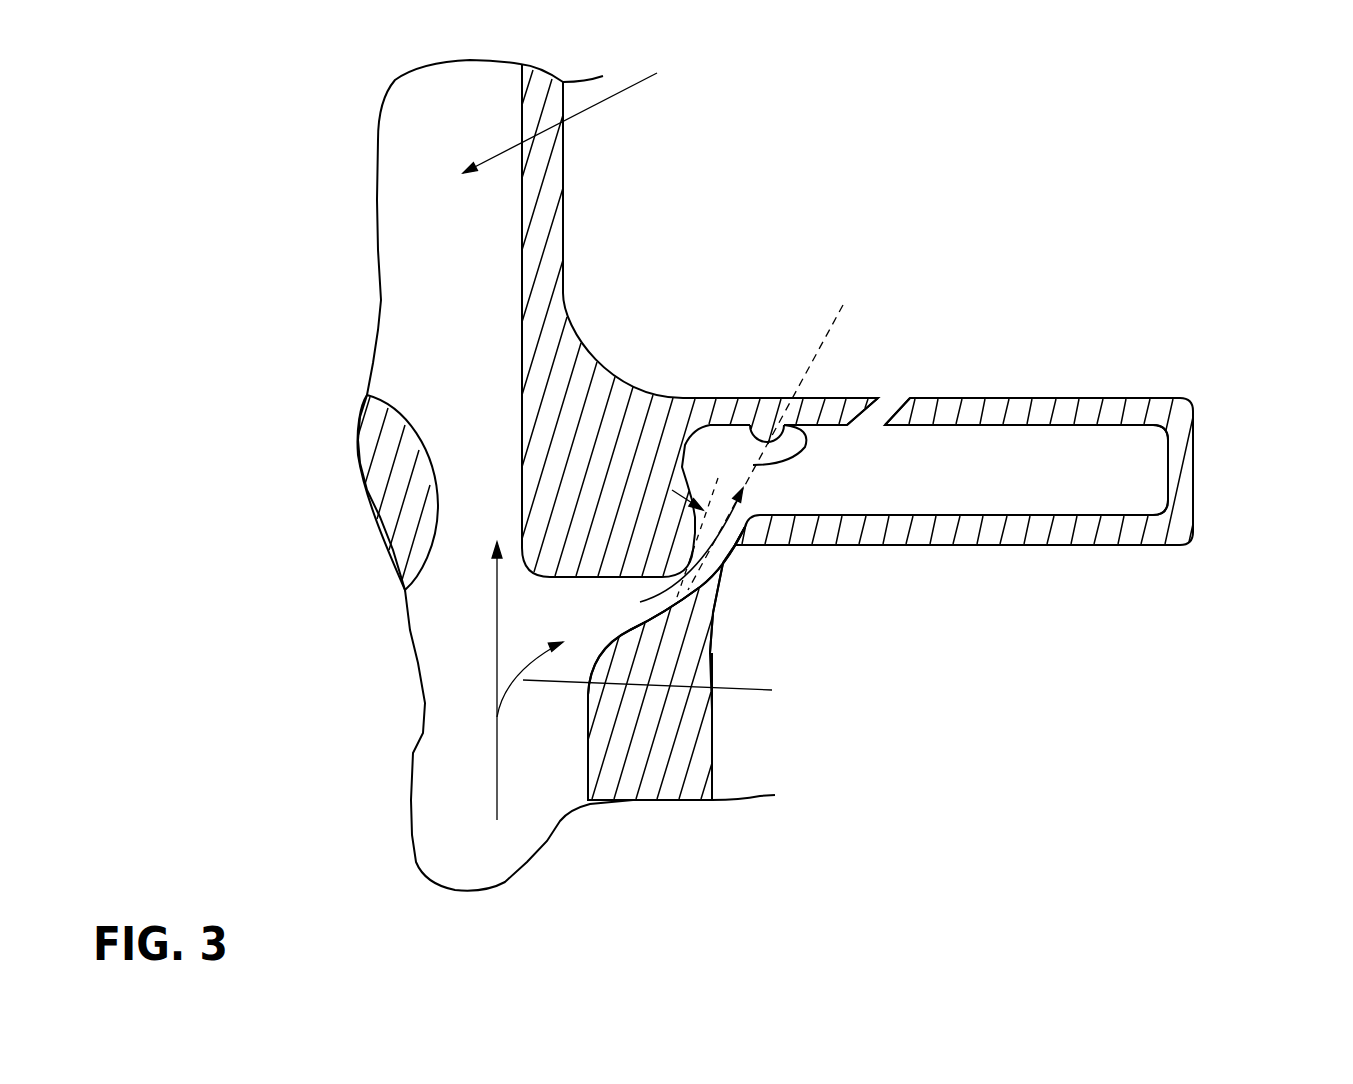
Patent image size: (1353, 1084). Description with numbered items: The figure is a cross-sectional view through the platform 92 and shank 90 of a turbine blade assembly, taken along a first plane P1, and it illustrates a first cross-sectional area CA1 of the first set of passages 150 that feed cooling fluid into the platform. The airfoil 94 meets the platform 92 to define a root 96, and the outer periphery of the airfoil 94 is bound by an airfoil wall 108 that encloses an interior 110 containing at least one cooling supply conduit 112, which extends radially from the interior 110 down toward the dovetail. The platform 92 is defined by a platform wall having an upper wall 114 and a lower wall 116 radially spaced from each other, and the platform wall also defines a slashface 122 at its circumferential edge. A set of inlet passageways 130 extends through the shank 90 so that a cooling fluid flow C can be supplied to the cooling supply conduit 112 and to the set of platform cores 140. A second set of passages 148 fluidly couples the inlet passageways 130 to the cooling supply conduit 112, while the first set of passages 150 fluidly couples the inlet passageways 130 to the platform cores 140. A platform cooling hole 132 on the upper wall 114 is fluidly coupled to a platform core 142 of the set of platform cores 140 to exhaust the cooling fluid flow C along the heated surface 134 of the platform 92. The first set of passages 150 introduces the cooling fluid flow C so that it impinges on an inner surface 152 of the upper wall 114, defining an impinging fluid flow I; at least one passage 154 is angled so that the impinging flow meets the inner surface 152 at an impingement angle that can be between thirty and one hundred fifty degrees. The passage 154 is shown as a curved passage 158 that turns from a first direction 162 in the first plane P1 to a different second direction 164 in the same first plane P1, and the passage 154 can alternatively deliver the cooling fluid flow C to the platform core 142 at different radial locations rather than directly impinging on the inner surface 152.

The shank 90 is at (713, 722).
The platform 92 is at (1057, 397).
The airfoil 94 is at (565, 180).
The root 96 is at (613, 373).
The airfoil wall 108 is at (565, 263).
The interior 110 is at (437, 333).
The cooling supply conduit 112 is at (580, 115).
The upper wall 114 is at (1138, 398).
The lower wall 116 is at (1060, 548).
The slashface 122 is at (1195, 460).
The set of inlet passageways 130 is at (550, 763).
The platform cooling hole 132 is at (885, 405).
The heated surface 134 is at (830, 397).
The set of platform cores 140 is at (931, 496).
The platform core 142 is at (983, 491).
The second set of passages 148 is at (458, 480).
The first set of passages 150 is at (718, 640).
The inner surface 152 is at (778, 427).
The passage 154 is at (707, 568).
The curved passage 158 is at (690, 608).
The first direction 162 is at (669, 690).
The second direction 164 is at (728, 525).
The first cross-sectional area CA1 is at (735, 528).
The impinging fluid flow I is at (684, 552).
The cooling fluid flow C is at (525, 693).
The first plane P1 is at (1093, 68).